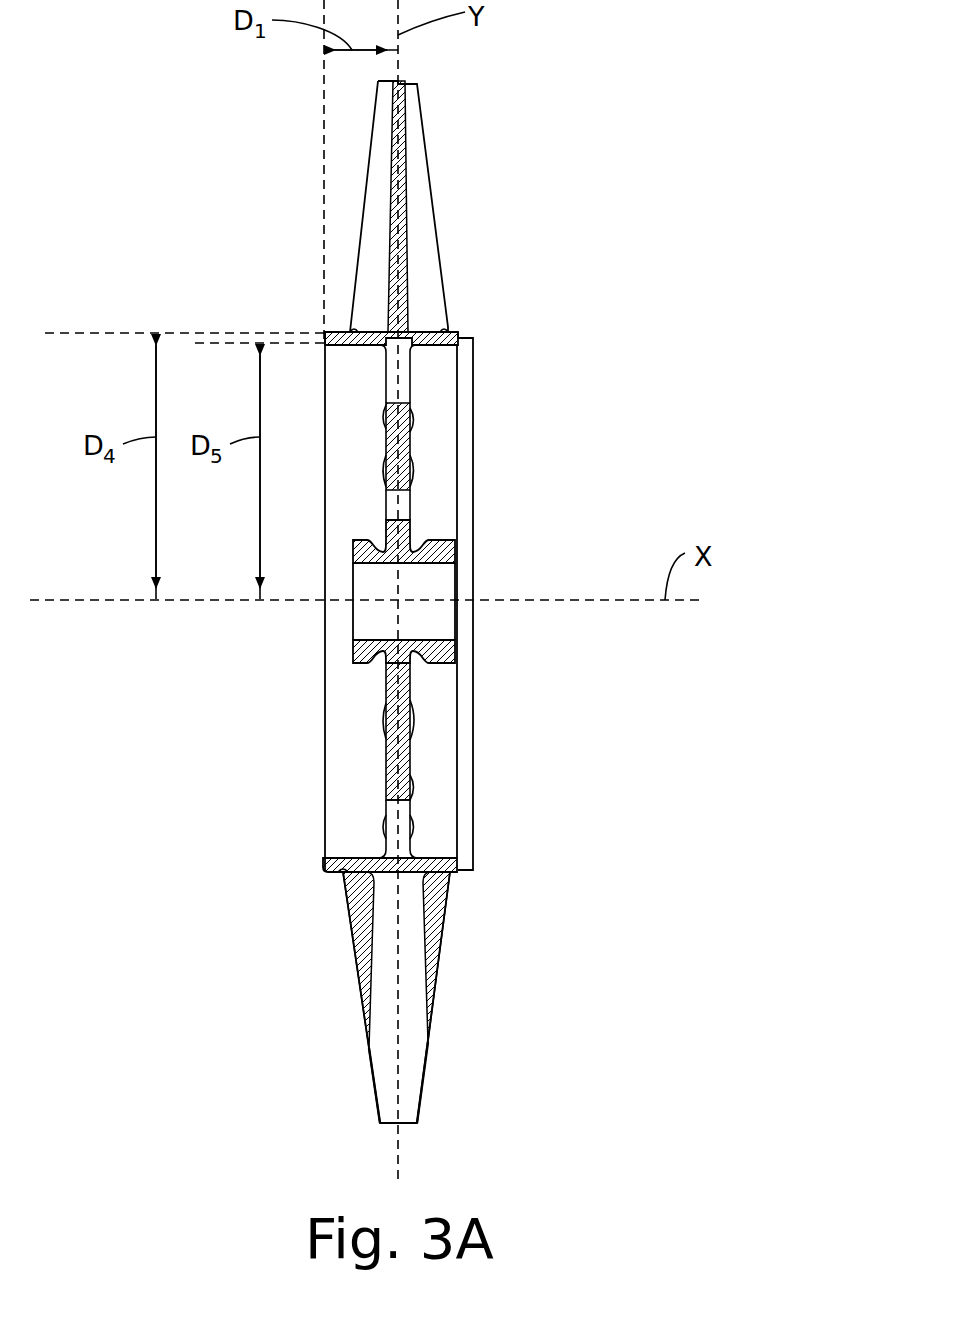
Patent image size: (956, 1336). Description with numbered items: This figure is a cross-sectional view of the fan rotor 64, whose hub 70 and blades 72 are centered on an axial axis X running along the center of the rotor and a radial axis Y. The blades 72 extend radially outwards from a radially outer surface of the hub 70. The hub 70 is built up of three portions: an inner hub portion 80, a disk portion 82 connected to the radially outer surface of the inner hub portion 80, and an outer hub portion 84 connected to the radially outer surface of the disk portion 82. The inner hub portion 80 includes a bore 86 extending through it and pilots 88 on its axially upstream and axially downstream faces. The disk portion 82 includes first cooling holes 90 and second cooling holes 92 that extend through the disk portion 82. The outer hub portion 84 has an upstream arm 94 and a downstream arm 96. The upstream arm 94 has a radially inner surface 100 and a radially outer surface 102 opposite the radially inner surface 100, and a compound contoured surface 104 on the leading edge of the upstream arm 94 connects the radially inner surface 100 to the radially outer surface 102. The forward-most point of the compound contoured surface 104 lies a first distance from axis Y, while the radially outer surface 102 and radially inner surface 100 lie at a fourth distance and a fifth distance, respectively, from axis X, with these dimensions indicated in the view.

The fan rotor 64 is at (592, 247).
The hub 70 is at (490, 367).
The blades 72 is at (418, 205).
The inner hub portion 80 is at (448, 552).
The disk portion 82 is at (410, 443).
The outer hub portion 84 is at (455, 332).
The bore 86 is at (422, 580).
The pilots 88 is at (457, 648).
The first cooling holes 90 is at (405, 507).
The second cooling holes 92 is at (410, 380).
The upstream arm 94 is at (352, 332).
The downstream arm 96 is at (447, 330).
The radially inner surface 100 is at (350, 358).
The radially outer surface 102 is at (372, 320).
The compound contoured surface 104 is at (318, 322).